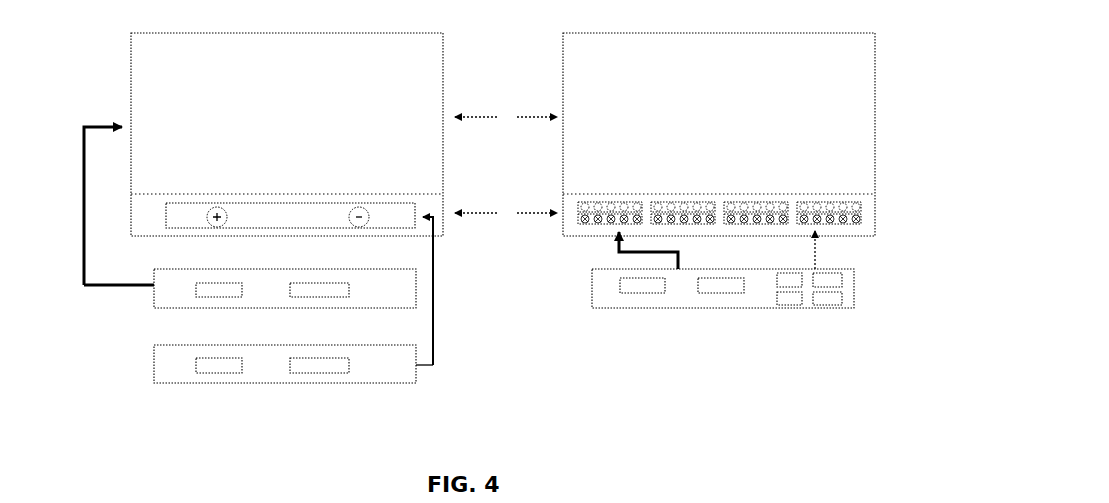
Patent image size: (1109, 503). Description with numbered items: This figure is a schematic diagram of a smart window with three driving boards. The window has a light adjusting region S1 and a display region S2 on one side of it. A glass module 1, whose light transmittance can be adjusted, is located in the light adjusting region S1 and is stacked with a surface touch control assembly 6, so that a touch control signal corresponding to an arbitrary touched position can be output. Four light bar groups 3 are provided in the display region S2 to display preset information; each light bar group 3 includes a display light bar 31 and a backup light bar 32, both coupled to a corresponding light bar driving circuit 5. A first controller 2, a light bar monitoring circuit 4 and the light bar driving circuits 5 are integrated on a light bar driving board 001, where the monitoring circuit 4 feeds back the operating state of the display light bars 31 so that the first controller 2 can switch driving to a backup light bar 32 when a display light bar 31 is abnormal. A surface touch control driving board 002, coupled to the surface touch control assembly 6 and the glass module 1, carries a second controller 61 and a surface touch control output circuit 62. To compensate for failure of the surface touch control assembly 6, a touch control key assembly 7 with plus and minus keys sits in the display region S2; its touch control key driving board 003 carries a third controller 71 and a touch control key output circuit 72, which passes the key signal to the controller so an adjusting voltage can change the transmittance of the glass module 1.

The glass module 1 is at (577, 50).
The surface touch control assembly 6 is at (143, 49).
The touch control key assembly 7 is at (167, 218).
The light bar group 3 is at (750, 207).
The display light bar 31 is at (862, 207).
The backup light bar 32 is at (862, 220).
The first controller 2 is at (642, 285).
The light bar monitoring circuit 4 is at (721, 285).
The light bar driving circuit 5 is at (809, 289).
The light bar driving board 001 is at (593, 297).
The surface touch control driving board 002 is at (155, 295).
The touch control key driving board 003 is at (155, 372).
The second controller 61 is at (219, 290).
The surface touch control output circuit 62 is at (319, 290).
The third controller 71 is at (219, 365).
The touch control key output circuit 72 is at (319, 365).
The light adjusting region S1 is at (506, 117).
The display region S2 is at (506, 213).